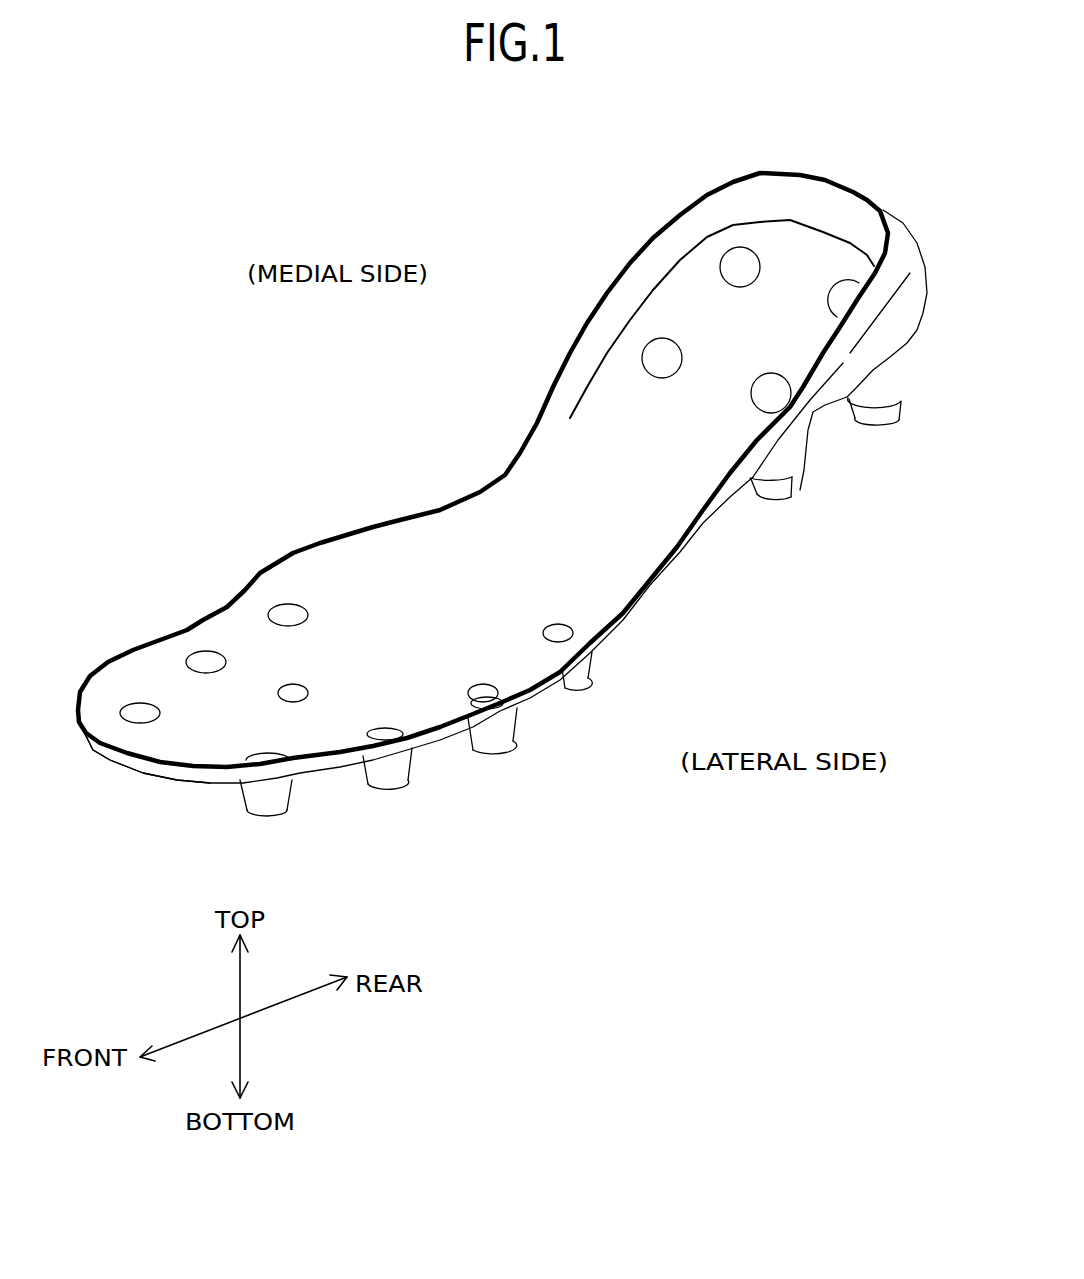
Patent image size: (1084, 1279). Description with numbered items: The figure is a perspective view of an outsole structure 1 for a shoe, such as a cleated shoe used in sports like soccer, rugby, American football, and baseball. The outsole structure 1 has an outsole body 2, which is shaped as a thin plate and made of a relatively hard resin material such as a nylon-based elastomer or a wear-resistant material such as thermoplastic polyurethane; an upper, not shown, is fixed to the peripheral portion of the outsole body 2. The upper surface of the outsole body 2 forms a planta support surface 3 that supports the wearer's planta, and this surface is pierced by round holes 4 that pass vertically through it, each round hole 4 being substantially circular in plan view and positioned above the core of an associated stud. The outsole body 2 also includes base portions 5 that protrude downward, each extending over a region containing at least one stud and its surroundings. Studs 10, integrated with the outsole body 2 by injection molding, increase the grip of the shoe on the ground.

The outsole structure 1 is at (512, 519).
The outsole body 2 is at (494, 478).
The planta support surface 3 is at (146, 771).
The round hole 4 is at (331, 668).
The base portion 5 is at (881, 350).
The stud 10 is at (595, 632).